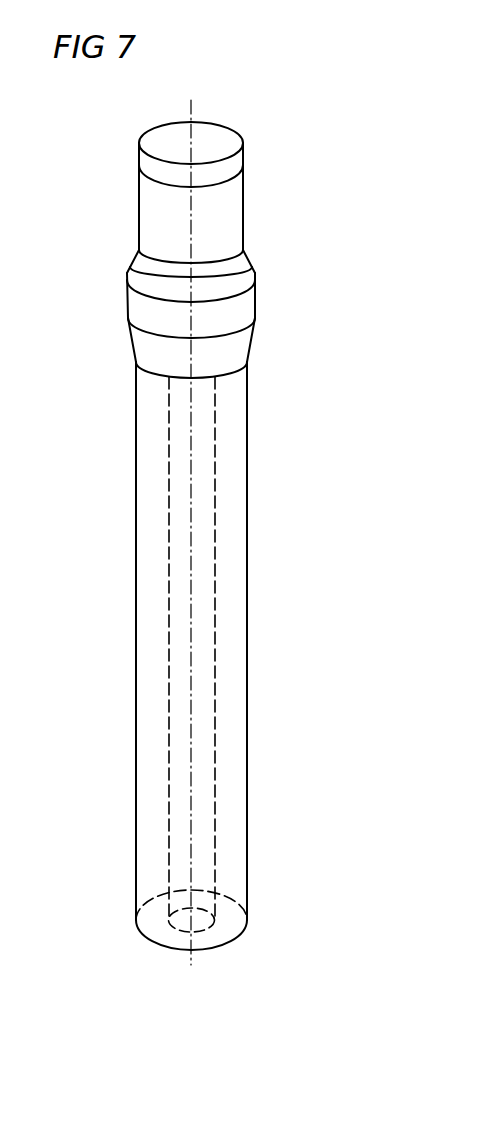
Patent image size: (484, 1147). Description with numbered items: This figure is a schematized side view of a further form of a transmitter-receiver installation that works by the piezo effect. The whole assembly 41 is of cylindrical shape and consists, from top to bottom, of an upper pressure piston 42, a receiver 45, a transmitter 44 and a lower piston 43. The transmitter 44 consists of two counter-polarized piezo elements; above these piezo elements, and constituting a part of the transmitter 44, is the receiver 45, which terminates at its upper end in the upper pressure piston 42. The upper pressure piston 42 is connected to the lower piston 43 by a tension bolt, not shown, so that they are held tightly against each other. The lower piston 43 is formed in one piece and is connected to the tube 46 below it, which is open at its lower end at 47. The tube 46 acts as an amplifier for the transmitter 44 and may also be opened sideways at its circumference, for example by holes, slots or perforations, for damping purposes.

The assembly 41 is at (258, 157).
The upper pressure piston 42 is at (218, 135).
The lower piston 43 is at (214, 321).
The transmitter 44 is at (253, 266).
The receiver 45 is at (230, 195).
The tube 46 is at (230, 482).
The opening 47 is at (215, 936).